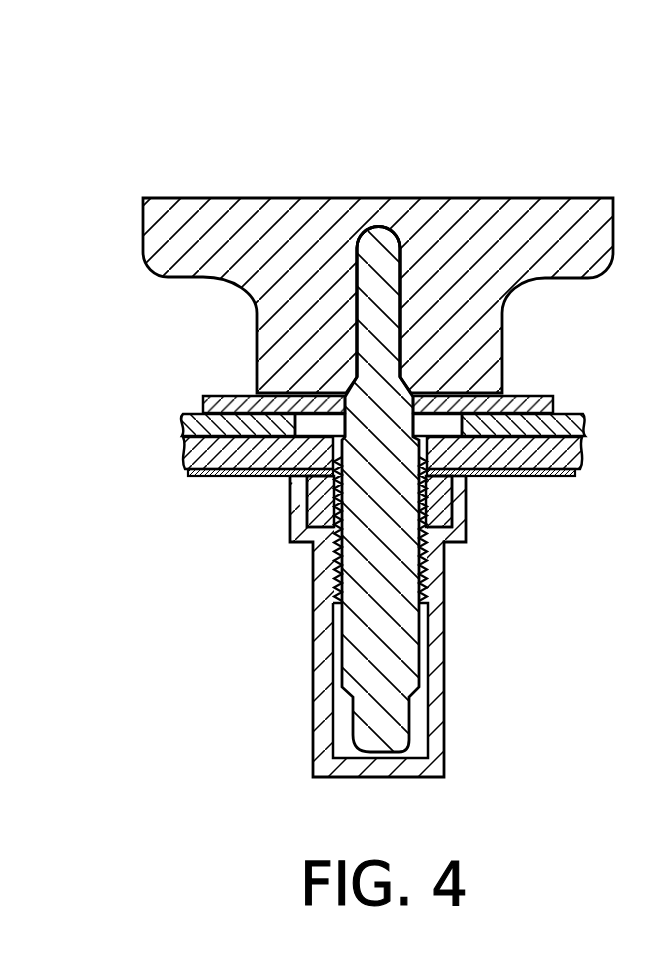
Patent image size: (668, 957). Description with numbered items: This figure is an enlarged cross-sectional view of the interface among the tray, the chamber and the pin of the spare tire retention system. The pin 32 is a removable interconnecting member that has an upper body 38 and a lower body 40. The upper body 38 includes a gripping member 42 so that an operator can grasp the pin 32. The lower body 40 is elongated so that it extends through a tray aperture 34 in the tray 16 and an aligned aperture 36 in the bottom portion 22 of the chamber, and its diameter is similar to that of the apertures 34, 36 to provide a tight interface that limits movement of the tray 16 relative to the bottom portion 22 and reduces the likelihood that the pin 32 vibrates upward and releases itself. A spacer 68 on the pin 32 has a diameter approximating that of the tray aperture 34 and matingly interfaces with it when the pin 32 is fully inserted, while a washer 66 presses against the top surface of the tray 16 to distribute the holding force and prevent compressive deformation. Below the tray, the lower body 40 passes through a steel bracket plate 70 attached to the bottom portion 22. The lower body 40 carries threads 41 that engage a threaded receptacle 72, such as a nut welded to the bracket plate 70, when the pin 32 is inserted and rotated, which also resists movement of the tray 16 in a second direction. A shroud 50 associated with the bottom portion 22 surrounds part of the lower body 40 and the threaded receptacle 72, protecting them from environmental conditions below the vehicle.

The pin 32 is at (356, 393).
The gripping member 42 is at (170, 275).
The upper body 38 is at (280, 302).
The aperture 36 is at (408, 462).
The washer 66 is at (553, 396).
The spacer 68 is at (447, 425).
The tray 16 is at (185, 420).
The bottom portion 22 is at (188, 457).
The bracket plate 70 is at (568, 477).
The aperture 34 is at (297, 421).
The threaded receptacle 72 is at (443, 503).
The lower body 40 is at (275, 552).
The threads 41 is at (423, 597).
The shroud 50 is at (313, 740).